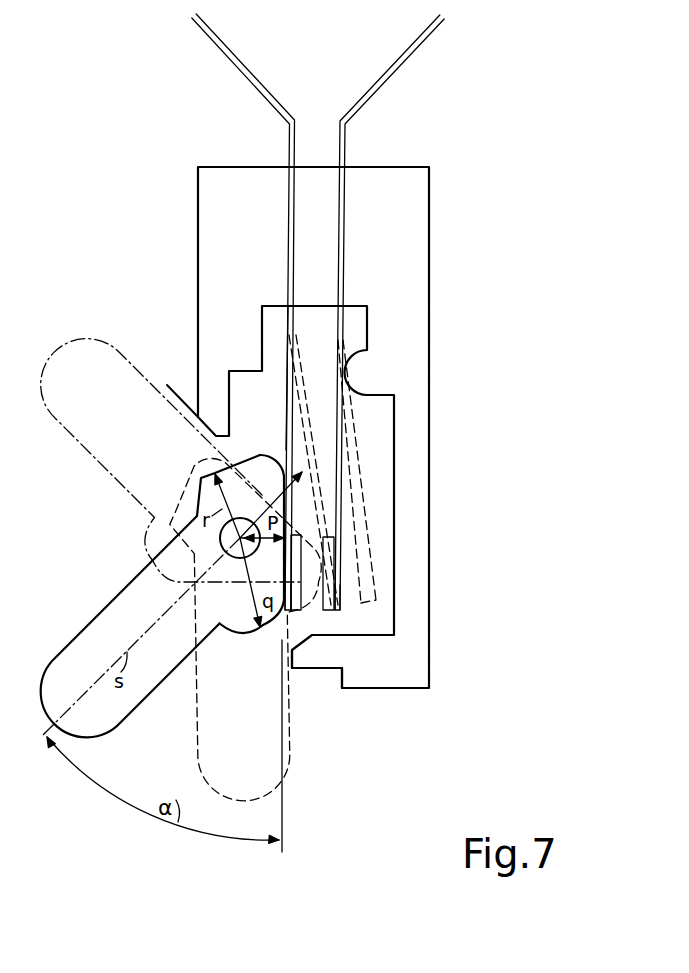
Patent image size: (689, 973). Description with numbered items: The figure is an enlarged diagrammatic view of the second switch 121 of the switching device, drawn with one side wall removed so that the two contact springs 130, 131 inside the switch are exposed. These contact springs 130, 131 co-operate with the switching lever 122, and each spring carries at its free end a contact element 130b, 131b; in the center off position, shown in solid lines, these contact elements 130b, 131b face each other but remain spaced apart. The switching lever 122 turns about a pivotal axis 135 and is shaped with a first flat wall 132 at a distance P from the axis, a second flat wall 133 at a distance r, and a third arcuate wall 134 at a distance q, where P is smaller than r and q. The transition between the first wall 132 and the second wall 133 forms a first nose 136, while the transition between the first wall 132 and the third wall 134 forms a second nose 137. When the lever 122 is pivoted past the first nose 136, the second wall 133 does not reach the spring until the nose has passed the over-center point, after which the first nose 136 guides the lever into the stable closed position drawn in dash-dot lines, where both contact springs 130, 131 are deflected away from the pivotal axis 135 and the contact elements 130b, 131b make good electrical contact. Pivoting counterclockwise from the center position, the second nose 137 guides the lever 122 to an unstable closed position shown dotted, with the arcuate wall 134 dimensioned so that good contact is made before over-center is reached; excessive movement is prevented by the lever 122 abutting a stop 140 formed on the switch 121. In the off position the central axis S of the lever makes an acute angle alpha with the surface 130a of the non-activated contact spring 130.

The second switch 121 is at (430, 630).
The switching lever 122 is at (105, 657).
The contact spring 130 is at (288, 253).
The surface of the non-activated contact spring 130a is at (286, 377).
The contact element 130b is at (290, 612).
The contact spring 131 is at (367, 256).
The contact element 131b is at (333, 613).
The first flat wall 132 is at (292, 578).
The second flat wall 133 is at (263, 448).
The third arcuate wall 134 is at (243, 628).
The pivotal axis 135 is at (274, 507).
The first nose 136 is at (275, 447).
The second nose 137 is at (283, 620).
The stop 140 is at (294, 664).